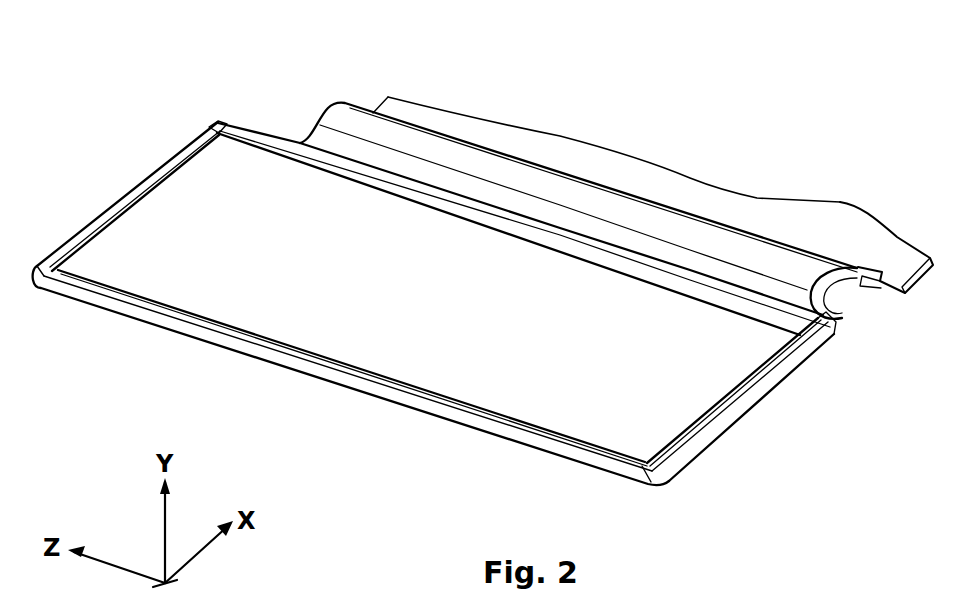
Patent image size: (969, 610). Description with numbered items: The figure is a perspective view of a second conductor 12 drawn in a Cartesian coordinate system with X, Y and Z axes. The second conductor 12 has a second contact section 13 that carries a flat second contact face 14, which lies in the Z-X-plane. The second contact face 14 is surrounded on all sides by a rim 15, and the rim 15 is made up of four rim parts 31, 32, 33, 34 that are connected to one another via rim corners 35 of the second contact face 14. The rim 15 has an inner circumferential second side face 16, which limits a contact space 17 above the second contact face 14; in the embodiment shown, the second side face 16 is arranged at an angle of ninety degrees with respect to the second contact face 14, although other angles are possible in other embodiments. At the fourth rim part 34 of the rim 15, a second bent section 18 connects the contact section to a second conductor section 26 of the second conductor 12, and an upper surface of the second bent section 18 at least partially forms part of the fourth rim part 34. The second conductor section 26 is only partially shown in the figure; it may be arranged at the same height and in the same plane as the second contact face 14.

The second conductor 12 is at (500, 100).
The second contact section 13 is at (783, 402).
The second contact face 14 is at (540, 390).
The rim 15 is at (460, 300).
The second side face 16 is at (152, 187).
The contact space 17 is at (302, 200).
The second bent section 18 is at (523, 182).
The second conductor section 26 is at (868, 230).
The first rim part 31 is at (753, 383).
The second rim part 32 is at (337, 372).
The third rim part 33 is at (107, 203).
The fourth rim part 34 is at (777, 303).
The rim corners 35 is at (213, 125).